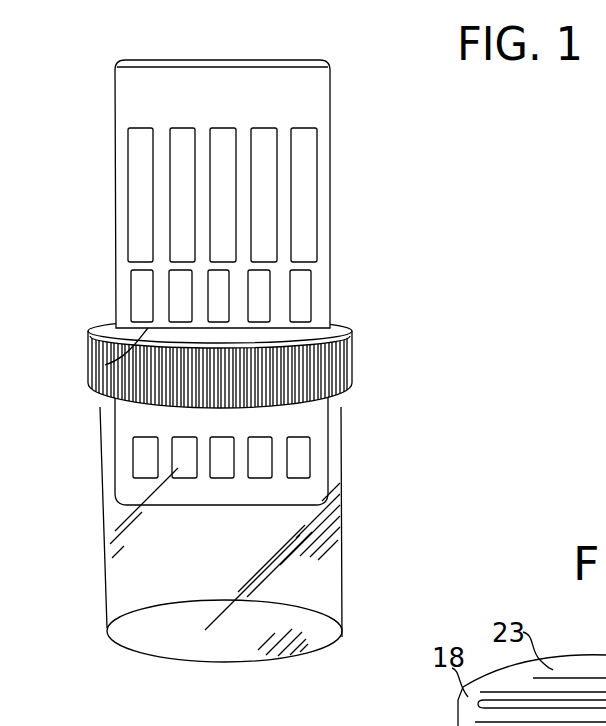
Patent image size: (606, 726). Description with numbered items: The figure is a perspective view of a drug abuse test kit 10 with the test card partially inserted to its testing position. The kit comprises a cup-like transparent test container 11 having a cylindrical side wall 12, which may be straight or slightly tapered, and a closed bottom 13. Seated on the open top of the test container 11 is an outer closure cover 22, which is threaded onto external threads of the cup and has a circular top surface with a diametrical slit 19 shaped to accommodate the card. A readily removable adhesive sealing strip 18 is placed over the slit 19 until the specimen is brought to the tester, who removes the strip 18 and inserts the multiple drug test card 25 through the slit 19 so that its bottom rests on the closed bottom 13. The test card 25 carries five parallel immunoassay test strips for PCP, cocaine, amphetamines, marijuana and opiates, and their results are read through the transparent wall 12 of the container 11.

The drug abuse test kit 10 is at (380, 231).
The test container 11 is at (342, 558).
The cylindrical side wall 12 is at (342, 462).
The closed bottom 13 is at (248, 663).
The adhesive sealing strip 18 is at (96, 323).
The diametrical slit 19 is at (105, 365).
The closure cover 22 is at (352, 356).
The test card 25 is at (330, 128).